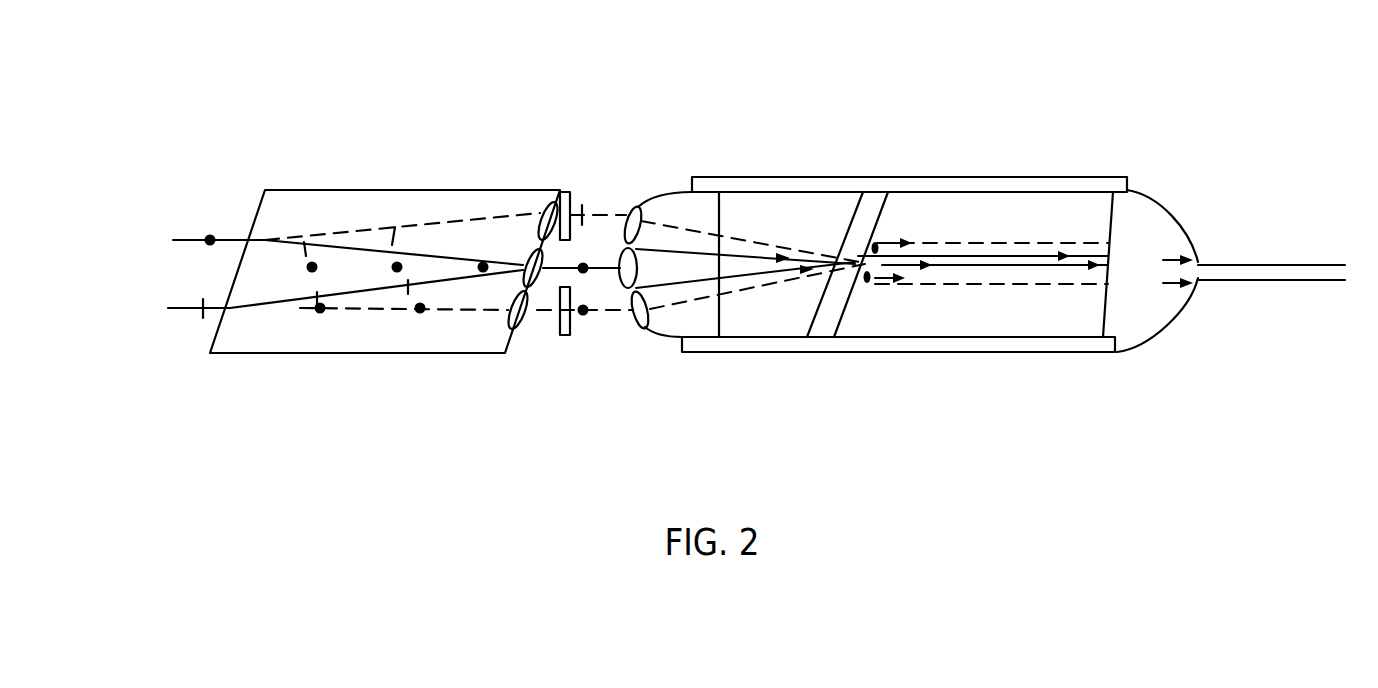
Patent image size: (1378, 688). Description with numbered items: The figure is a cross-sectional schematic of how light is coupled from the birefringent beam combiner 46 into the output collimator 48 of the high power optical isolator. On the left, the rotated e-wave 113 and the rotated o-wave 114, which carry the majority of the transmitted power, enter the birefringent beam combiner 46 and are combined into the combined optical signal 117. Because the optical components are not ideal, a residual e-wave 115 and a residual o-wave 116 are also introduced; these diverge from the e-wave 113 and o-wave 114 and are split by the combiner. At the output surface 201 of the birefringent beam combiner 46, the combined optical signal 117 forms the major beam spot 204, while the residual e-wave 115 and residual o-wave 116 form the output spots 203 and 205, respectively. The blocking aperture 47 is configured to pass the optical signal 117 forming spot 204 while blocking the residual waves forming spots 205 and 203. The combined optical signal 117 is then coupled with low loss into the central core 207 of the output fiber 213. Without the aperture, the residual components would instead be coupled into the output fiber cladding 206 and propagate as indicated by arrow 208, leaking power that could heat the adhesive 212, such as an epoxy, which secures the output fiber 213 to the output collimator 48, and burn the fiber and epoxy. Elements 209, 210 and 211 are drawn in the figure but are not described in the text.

The birefringent beam combiner 46 is at (241, 70).
The output collimator 48 is at (1061, 60).
The e-wave 113 is at (185, 238).
The o-wave 114 is at (185, 308).
The residual e-wave 115 is at (427, 228).
The residual o-wave 116 is at (383, 310).
The combined optical signal 117 is at (605, 272).
The blocking aperture 47 is at (567, 337).
The output surface 201 is at (512, 338).
The output spot 203 is at (543, 206).
The major beam spot 204 is at (548, 262).
The output spot 205 is at (510, 327).
The output fiber cladding 206 is at (880, 246).
The central core 207 is at (913, 263).
The arrow 208 is at (870, 282).
The housing bottom wall 209 is at (1043, 320).
The housing front wall 210 is at (680, 300).
The housing top wall 211 is at (1033, 208).
The adhesive 212 is at (1157, 220).
The output fiber 213 is at (1277, 280).